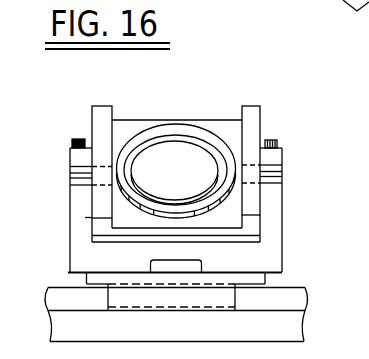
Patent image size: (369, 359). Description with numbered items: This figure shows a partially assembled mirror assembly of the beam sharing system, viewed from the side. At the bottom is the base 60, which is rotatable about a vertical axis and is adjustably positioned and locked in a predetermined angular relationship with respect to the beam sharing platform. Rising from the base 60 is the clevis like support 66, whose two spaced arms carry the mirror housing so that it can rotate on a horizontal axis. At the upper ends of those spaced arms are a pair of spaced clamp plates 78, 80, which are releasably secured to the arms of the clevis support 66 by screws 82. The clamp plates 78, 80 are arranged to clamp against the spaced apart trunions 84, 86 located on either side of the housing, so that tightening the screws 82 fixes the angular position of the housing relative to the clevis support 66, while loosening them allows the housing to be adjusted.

The base 60 is at (218, 276).
The clevis like support 66 is at (270, 207).
The clamp plate 78 is at (71, 160).
The clamp plate 80 is at (268, 158).
The screws 82 is at (79, 138).
The trunion 84 is at (277, 178).
The trunion 86 is at (61, 206).